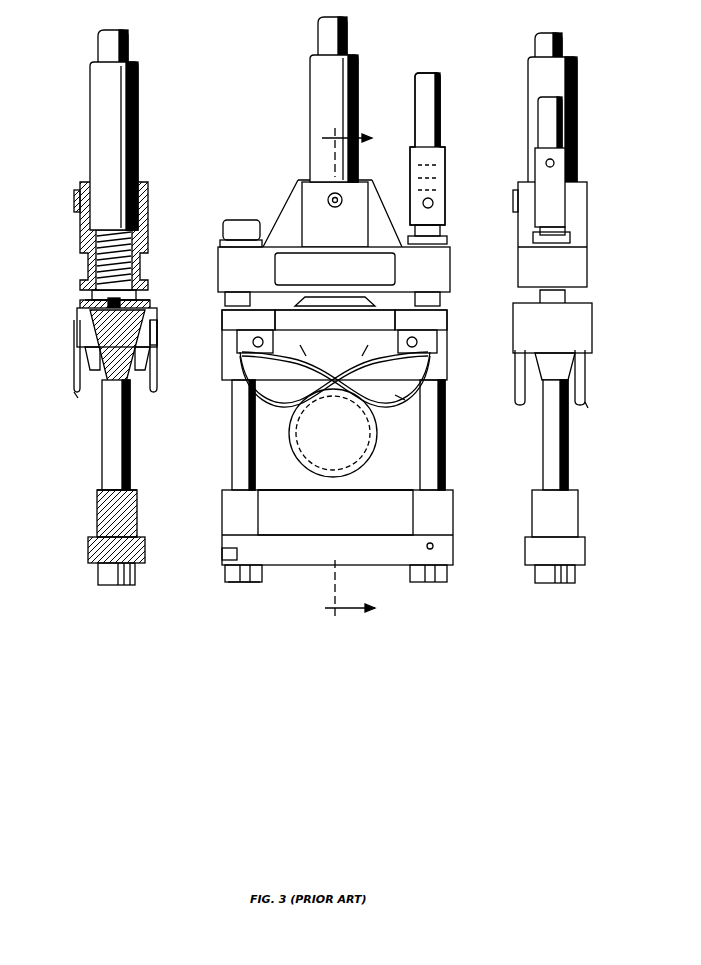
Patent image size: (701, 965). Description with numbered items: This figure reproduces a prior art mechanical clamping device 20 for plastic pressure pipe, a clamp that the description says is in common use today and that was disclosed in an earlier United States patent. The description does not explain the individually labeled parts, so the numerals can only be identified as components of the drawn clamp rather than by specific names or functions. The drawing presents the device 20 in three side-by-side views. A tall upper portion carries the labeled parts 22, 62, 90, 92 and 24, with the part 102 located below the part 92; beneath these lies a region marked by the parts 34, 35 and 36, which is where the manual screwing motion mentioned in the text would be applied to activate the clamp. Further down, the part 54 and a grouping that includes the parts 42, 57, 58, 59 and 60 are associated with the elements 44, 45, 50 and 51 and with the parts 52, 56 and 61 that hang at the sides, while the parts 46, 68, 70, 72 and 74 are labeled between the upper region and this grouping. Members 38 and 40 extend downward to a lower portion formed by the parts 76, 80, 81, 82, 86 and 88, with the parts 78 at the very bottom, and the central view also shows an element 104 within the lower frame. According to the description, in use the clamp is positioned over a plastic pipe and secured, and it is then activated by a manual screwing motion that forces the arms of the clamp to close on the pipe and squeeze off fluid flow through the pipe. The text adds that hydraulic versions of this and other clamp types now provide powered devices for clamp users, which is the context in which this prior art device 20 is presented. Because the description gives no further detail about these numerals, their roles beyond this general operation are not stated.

The prior art alignment assembly 20 is at (288, 171).
The cylinder 22 is at (140, 102).
The rod assembly 24 is at (442, 93).
The housing 34 is at (78, 233).
The threads 35 is at (140, 263).
The mounting pedestal 36 is at (148, 190).
The post 38 is at (232, 401).
The rod 40 is at (132, 438).
The block 42 is at (448, 361).
The spring wire 44 is at (112, 386).
The spring wire end 45 is at (390, 406).
The washer 46 is at (375, 302).
The spring 50 is at (352, 340).
The spring wire end 51 is at (278, 406).
The finger 52 is at (157, 384).
The plate 54 is at (452, 259).
The finger 56 is at (74, 346).
The block portion 57 is at (240, 333).
The block portion 58 is at (240, 315).
The block portion 59 is at (440, 346).
The block portion 60 is at (432, 315).
The finger tip 61 is at (78, 393).
The cap 62 is at (130, 40).
The nut 68 is at (92, 295).
The pin 70 is at (122, 298).
The plate 72 is at (150, 306).
The cone 74 is at (140, 319).
The base block 76 is at (88, 549).
The nut 78 is at (135, 576).
The bottom plate 80 is at (435, 546).
The shoulder 81 is at (106, 491).
The bolt 82 is at (265, 566).
The bracket 86 is at (225, 557).
The nut 88 is at (245, 583).
The rod 90 is at (442, 129).
The body 92 is at (447, 184).
The washer 102 is at (448, 238).
The opening 104 is at (378, 441).